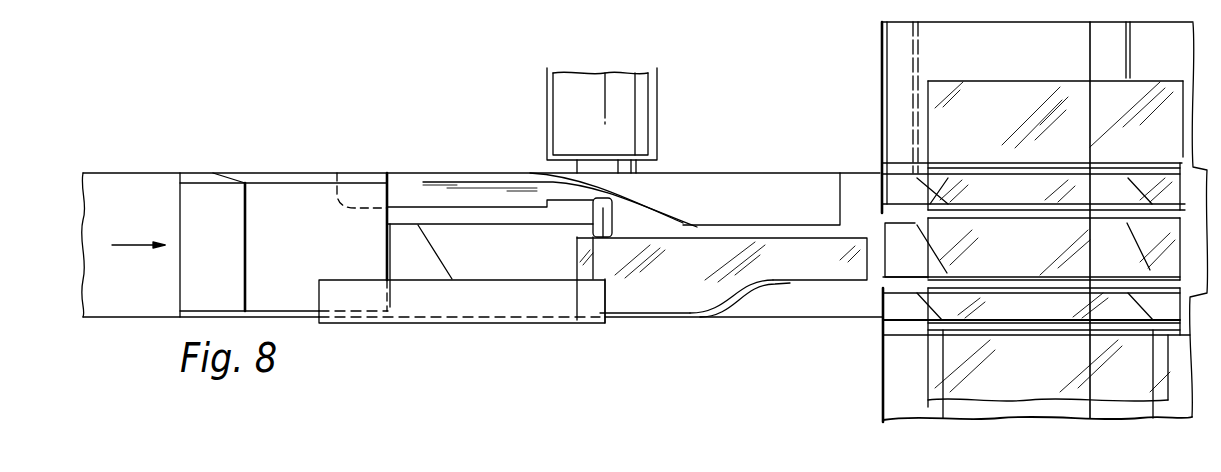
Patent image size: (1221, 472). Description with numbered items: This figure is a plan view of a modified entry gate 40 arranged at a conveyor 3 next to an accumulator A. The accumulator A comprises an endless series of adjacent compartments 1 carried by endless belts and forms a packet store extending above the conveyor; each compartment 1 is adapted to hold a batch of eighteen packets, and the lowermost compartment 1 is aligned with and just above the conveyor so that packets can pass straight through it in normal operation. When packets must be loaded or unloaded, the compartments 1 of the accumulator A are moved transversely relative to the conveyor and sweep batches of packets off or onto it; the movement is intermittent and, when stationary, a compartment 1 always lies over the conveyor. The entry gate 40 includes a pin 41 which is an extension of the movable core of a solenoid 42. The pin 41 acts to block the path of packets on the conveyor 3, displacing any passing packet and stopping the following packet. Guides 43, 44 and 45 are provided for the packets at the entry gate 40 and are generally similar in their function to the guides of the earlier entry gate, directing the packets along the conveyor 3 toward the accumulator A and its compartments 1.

The compartment 1 is at (937, 232).
The conveyor 3 is at (137, 300).
The entry gate 40 is at (540, 170).
The pin 41 is at (607, 220).
The solenoid 42 is at (623, 112).
The guide 43 is at (405, 190).
The guide 44 is at (437, 298).
The guide 45 is at (743, 290).
The accumulator A is at (877, 328).